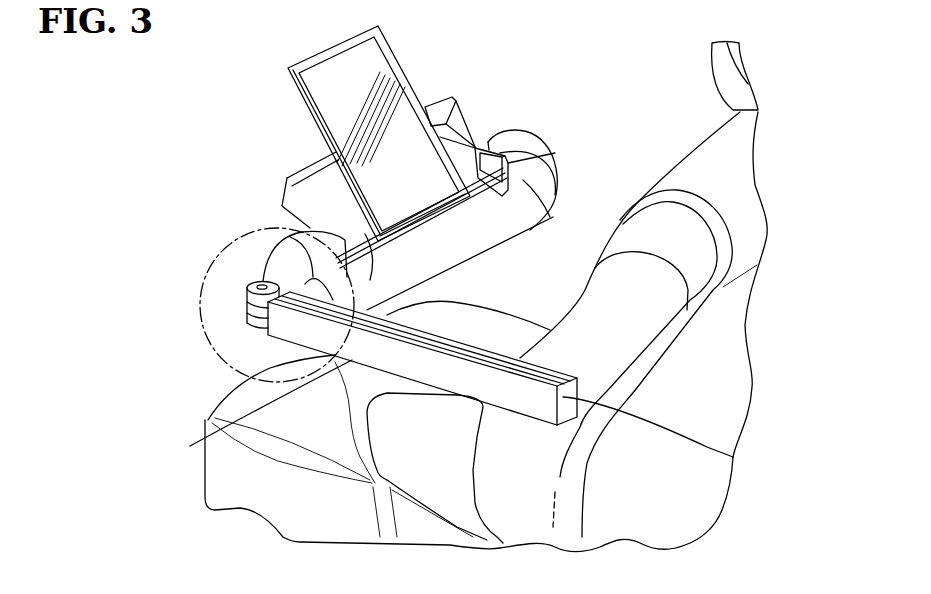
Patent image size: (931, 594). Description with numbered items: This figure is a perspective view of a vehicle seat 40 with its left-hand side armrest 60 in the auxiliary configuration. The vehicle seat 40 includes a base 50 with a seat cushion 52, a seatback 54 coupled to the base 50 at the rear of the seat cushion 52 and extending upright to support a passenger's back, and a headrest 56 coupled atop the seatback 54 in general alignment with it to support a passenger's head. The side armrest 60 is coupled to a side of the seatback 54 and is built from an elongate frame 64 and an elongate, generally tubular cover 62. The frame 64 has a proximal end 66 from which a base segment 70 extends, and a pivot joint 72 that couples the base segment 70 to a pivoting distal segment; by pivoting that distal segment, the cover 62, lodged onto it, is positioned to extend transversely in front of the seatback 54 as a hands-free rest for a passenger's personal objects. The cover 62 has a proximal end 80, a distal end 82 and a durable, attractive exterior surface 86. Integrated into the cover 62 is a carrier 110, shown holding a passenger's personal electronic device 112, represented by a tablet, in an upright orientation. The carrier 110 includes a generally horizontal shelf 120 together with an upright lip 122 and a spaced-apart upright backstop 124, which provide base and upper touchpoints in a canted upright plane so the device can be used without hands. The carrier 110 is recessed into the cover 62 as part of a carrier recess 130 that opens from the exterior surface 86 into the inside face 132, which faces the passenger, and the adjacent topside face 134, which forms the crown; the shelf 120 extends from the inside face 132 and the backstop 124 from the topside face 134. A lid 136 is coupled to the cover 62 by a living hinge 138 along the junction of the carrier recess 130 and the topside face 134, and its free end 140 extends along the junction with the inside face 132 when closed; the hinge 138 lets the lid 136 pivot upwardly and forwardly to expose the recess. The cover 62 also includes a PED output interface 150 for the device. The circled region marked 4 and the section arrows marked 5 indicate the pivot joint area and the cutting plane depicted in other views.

The detail view circle 4 is at (200, 303).
The section line 5 is at (300, 167).
The vehicle seat 40 is at (753, 70).
The base 50 is at (253, 502).
The seat cushion 52 is at (397, 457).
The seatback 54 is at (727, 390).
The headrest 56 is at (750, 94).
The side armrest 60 is at (535, 137).
The cover 62 is at (543, 152).
The frame 64 is at (208, 420).
The proximal end 66 is at (733, 457).
The base segment 70 is at (192, 446).
The pivot joint 72 is at (247, 307).
The proximal end 80 is at (263, 262).
The distal end 82 is at (557, 190).
The exterior surface 86 is at (279, 266).
The carrier 110 is at (327, 212).
The personal electronic device 112 is at (380, 25).
The shelf 120 is at (370, 240).
The lip 122 is at (412, 232).
The backstop 124 is at (375, 265).
The carrier recess 130 is at (480, 187).
The inside face 132 is at (543, 217).
The topside face 134 is at (488, 142).
The lid 136 is at (432, 97).
The hinge 138 is at (470, 140).
The free end 140 is at (452, 100).
The PED output interface 150 is at (497, 155).